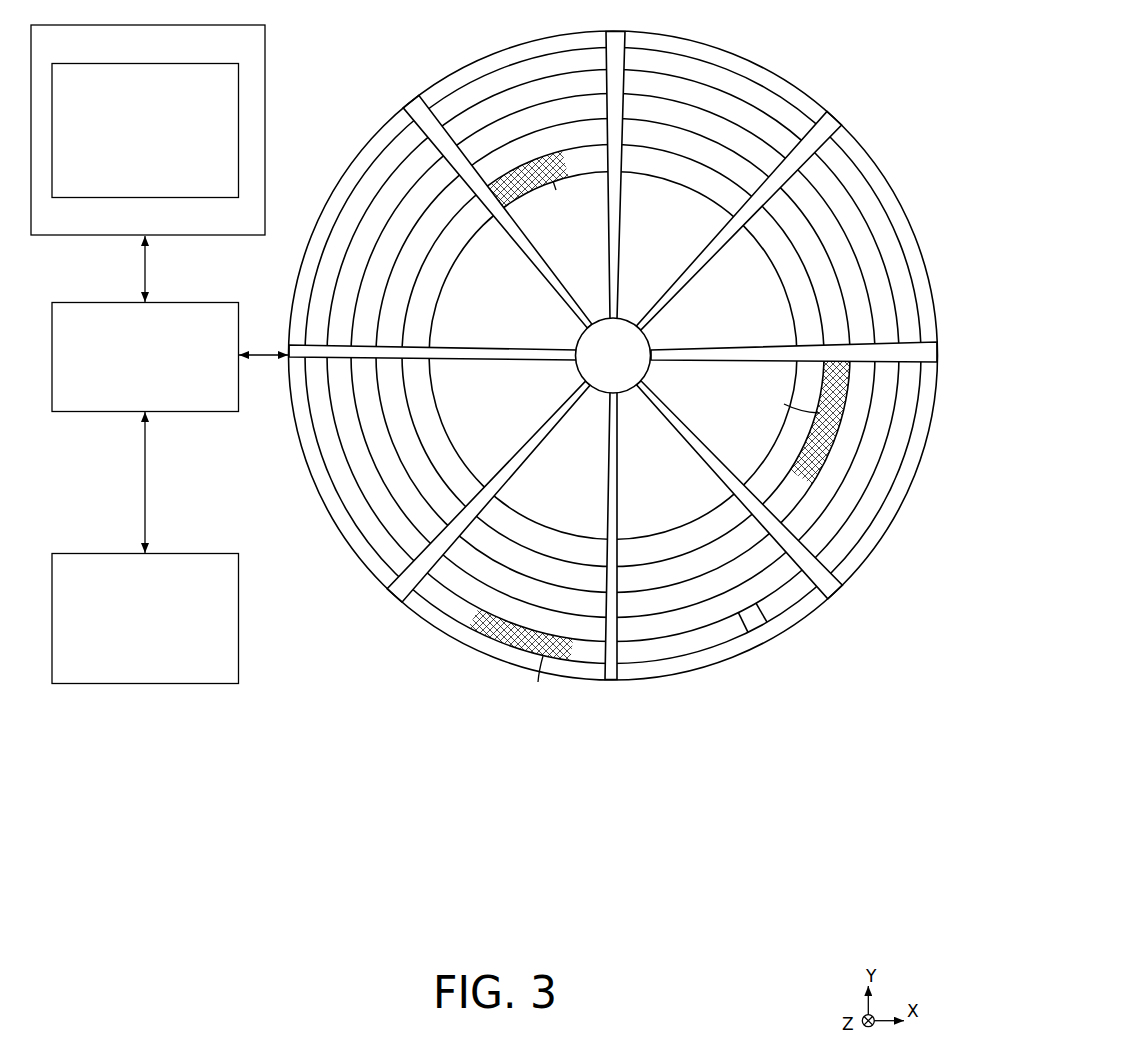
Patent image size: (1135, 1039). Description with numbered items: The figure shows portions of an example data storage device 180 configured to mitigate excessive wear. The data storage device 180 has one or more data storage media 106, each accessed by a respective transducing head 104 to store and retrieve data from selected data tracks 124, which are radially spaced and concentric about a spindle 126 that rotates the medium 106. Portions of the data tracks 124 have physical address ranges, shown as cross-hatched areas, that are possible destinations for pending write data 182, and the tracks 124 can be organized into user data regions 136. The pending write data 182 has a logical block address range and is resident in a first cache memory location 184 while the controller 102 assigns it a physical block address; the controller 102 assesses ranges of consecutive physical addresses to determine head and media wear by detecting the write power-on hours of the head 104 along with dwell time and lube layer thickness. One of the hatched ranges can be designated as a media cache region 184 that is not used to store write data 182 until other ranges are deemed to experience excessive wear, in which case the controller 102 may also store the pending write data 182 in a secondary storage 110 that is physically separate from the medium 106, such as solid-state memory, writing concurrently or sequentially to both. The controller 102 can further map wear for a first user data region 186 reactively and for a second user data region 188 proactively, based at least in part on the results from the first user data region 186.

The data storage device 180 is at (842, 58).
The first user data region 186 is at (418, 94).
The second user data region 188 is at (888, 175).
The data track 124 is at (331, 228).
The spindle 126 is at (633, 368).
The user data region 136 is at (608, 447).
The data storage medium 106 is at (888, 531).
The transducing head 104 is at (757, 628).
The media cache region 184 is at (258, 55).
The pending write data 182 is at (94, 91).
The controller 102 is at (93, 405).
The secondary storage 110 is at (94, 677).